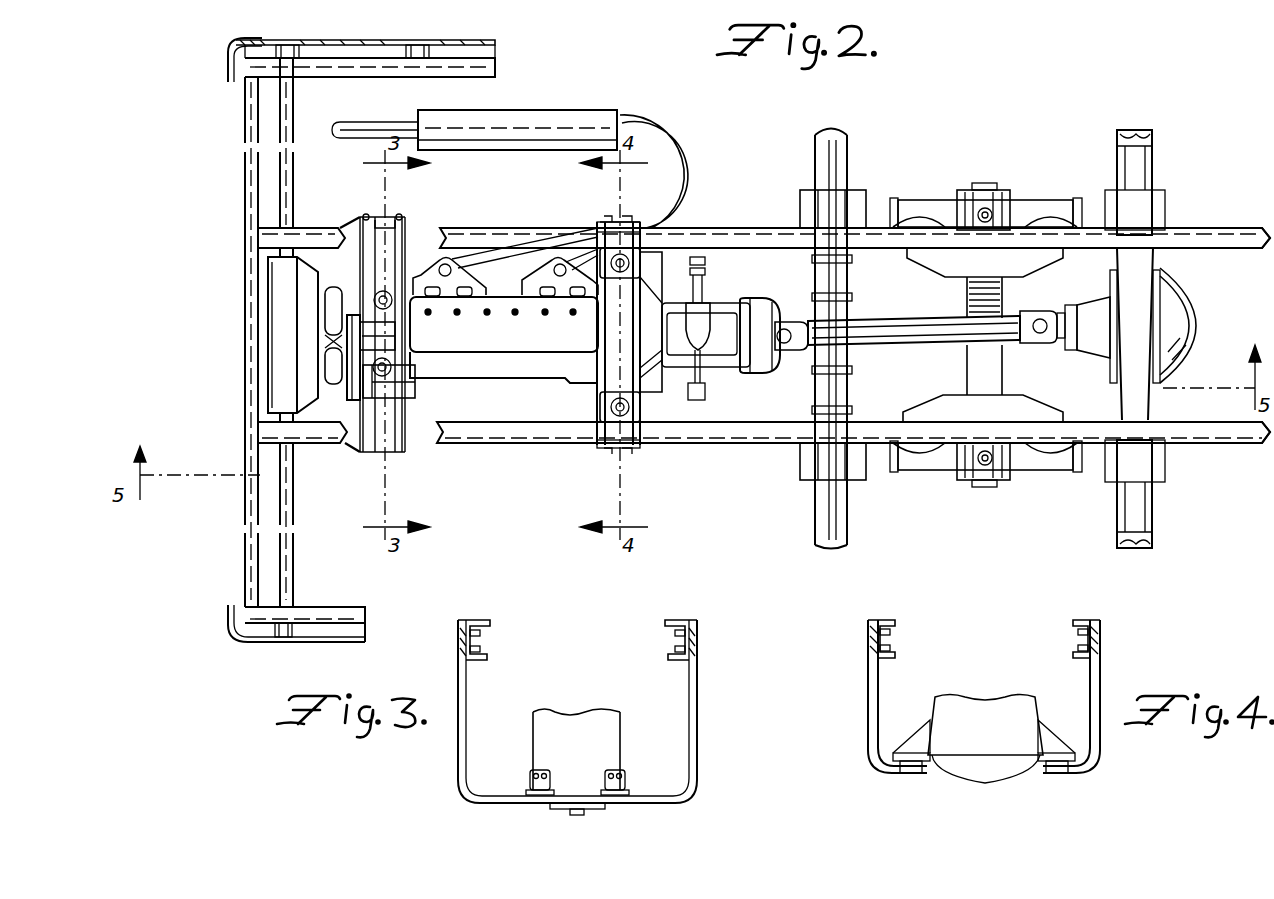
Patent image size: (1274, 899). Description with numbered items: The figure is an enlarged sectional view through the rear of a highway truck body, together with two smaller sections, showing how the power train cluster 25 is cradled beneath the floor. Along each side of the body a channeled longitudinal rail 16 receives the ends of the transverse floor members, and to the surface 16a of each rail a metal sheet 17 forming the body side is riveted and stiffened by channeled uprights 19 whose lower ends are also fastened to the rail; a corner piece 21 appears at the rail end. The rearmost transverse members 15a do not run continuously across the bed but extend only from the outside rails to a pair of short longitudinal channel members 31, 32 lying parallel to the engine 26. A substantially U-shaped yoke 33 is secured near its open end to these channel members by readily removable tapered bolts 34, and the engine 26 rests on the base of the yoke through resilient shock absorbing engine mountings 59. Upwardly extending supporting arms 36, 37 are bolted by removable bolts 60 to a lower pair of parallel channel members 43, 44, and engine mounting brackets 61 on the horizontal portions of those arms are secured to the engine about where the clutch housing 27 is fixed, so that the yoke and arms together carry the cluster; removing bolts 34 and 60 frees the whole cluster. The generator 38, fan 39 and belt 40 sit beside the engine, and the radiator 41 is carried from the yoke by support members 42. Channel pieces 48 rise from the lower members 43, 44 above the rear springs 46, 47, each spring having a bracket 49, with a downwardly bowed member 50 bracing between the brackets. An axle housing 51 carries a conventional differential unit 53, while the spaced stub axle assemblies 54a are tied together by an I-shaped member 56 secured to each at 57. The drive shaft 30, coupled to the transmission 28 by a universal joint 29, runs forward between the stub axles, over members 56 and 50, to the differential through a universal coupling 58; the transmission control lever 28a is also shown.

In FIG. 2, the rearmost transverse members 15a is at (293, 150).
In FIG. 2, the channeled longitudinal rails 16 is at (490, 72).
In FIG. 2, the surface of rails 16a is at (490, 50).
In FIG. 2, the metal sheet 17 is at (380, 62).
In FIG. 2, the channeled ribs or uprights 19 is at (305, 58).
In FIG. 2, the corner bracket 21 is at (470, 40).
In FIG. 2, the power train cluster 25 is at (506, 388).
In FIG. 2, the engine 26 is at (545, 332).
In FIG. 3, the engine 26 is at (578, 728).
In FIG. 2, the clutch housing 27 is at (625, 372).
In FIG. 4, the clutch housing 27 is at (985, 708).
In FIG. 2, the transmission 28 is at (720, 320).
In FIG. 2, the transmission control lever 28a is at (718, 262).
In FIG. 2, the universal joint 29 is at (780, 372).
In FIG. 2, the drive shaft 30 is at (940, 340).
In FIG. 2, the channel member 31 is at (488, 238).
In FIG. 3, the channel member 31 is at (485, 622).
In FIG. 2, the channel member 32 is at (265, 432).
In FIG. 3, the channel member 32 is at (670, 622).
In FIG. 2, the U-shaped yoke 33 is at (405, 452).
In FIG. 3, the U-shaped yoke 33 is at (697, 728).
In FIG. 3, the tapered bolts 34 is at (480, 649).
In FIG. 2, the supporting arm 36 is at (628, 222).
In FIG. 4, the supporting arm 36 is at (1100, 668).
In FIG. 2, the supporting arm 37 is at (265, 236).
In FIG. 4, the supporting arm 37 is at (868, 706).
In FIG. 2, the generator 38 is at (415, 390).
In FIG. 2, the fan 39 is at (340, 292).
In FIG. 2, the belt 40 is at (348, 400).
In FIG. 2, the radiator 41 is at (285, 342).
In FIG. 2, the support members 42 is at (355, 222).
In FIG. 2, the channel member 43 is at (1222, 246).
In FIG. 4, the channel member 43 is at (1072, 622).
In FIG. 2, the channel member 44 is at (1220, 424).
In FIG. 4, the channel member 44 is at (895, 622).
In FIG. 2, the rear road wheel spring 46 is at (1060, 205).
In FIG. 2, the rear road wheel spring 47 is at (1055, 470).
In FIG. 2, the channel pieces 48 is at (975, 200).
In FIG. 2, the bracket 49 is at (1032, 260).
In FIG. 2, the downwardly bowed member 50 is at (967, 298).
In FIG. 2, the axle housing 51 is at (1152, 158).
In FIG. 2, the differential unit 53 is at (1175, 312).
In FIG. 2, the stub axle assemblies 54a is at (847, 130).
In FIG. 2, the I-shaped member 56 is at (812, 344).
In FIG. 2, the securing points 57 is at (852, 296).
In FIG. 2, the universal coupling 58 is at (1050, 345).
In FIG. 2, the engine mountings 59 is at (392, 292).
In FIG. 3, the engine mountings 59 is at (605, 782).
In FIG. 2, the bolts 60 is at (605, 222).
In FIG. 4, the bolts 60 is at (880, 648).
In FIG. 2, the engine mounting brackets 61 is at (632, 262).
In FIG. 4, the engine mounting brackets 61 is at (910, 773).